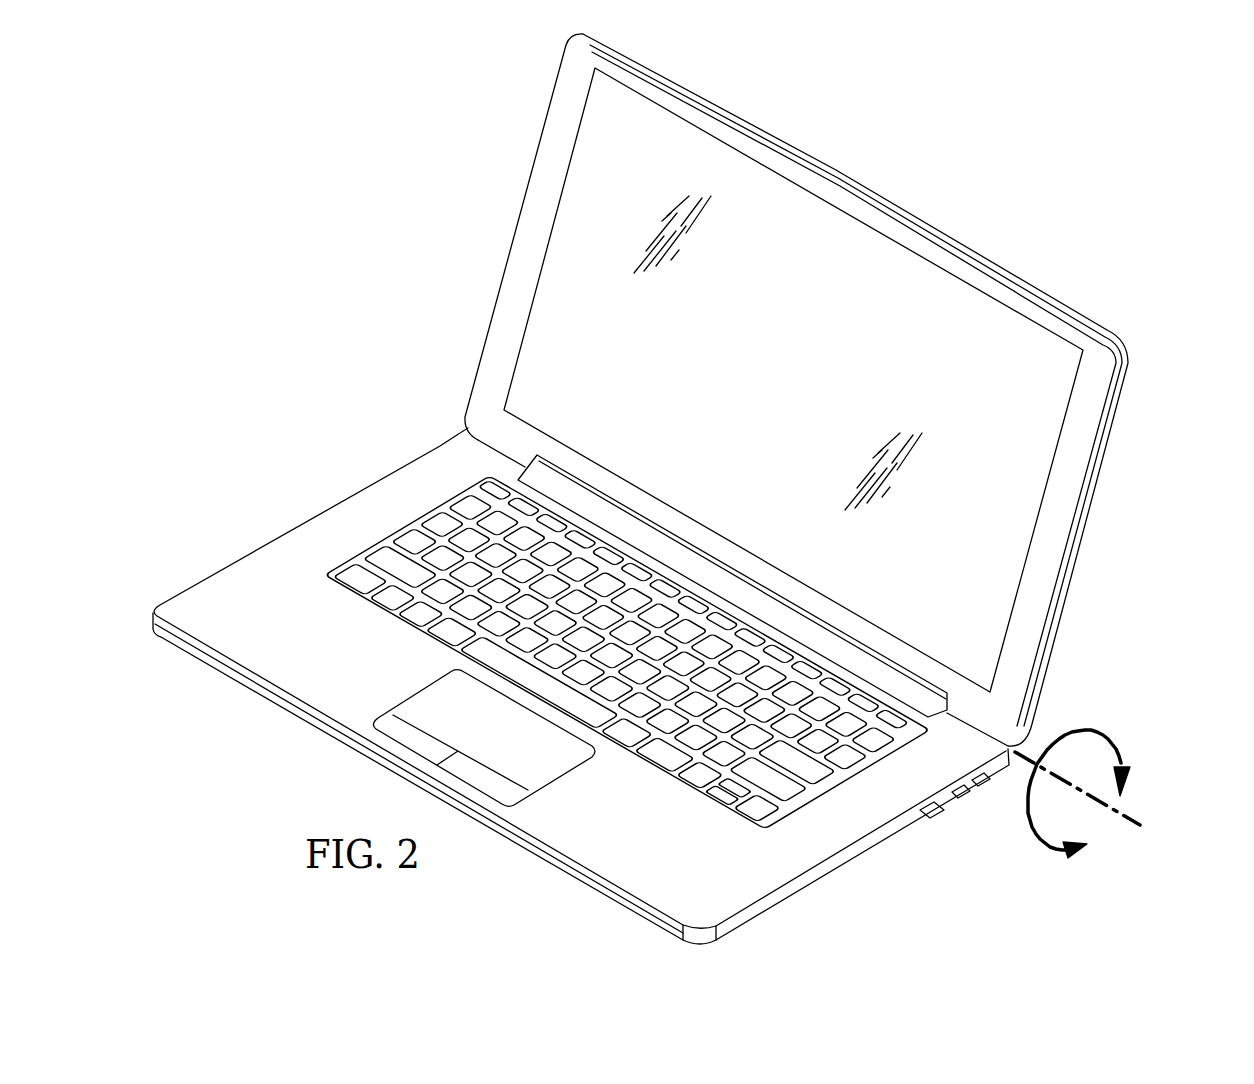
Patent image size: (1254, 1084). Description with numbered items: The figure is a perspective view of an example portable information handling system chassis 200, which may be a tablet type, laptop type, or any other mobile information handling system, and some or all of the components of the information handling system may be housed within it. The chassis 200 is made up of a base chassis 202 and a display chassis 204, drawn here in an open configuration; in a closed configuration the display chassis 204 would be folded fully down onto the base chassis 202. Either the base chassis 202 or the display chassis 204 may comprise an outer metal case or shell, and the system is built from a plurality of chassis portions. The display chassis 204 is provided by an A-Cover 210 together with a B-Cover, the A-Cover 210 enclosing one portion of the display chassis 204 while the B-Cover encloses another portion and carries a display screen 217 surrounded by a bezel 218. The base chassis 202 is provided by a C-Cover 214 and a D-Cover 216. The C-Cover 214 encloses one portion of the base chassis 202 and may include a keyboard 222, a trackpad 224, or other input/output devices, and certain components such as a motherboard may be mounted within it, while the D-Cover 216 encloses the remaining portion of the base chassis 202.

The portable information handling system chassis 200 is at (1066, 183).
The base chassis 202 is at (834, 892).
The display chassis 204 is at (1103, 563).
The A-Cover 210 is at (1100, 477).
The C-Cover 214 is at (228, 578).
The D-Cover 216 is at (277, 702).
The display screen 217 is at (876, 262).
The bezel 218 is at (722, 108).
The keyboard 222 is at (452, 505).
The trackpad 224 is at (542, 770).